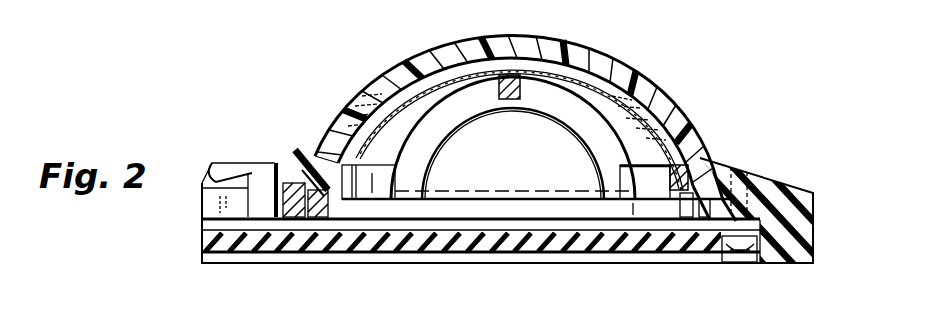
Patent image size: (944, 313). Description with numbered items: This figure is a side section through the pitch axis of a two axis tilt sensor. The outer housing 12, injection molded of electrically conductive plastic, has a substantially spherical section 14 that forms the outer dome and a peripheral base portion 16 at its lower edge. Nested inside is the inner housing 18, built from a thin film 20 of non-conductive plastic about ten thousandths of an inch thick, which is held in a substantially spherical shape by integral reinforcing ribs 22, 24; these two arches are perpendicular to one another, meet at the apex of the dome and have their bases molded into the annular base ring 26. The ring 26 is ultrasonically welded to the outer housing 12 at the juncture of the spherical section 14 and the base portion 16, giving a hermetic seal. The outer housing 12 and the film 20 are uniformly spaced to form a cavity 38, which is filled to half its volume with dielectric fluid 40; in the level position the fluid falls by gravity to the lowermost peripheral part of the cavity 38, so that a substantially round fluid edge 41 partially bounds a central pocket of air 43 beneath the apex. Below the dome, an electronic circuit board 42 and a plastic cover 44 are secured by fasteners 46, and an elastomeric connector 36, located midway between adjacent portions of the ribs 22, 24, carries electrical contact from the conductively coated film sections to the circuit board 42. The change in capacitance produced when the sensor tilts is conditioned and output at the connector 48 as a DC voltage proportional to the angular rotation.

The outer housing 12 is at (692, 115).
The substantially spherical section 14 is at (533, 34).
The peripheral base portion 16 is at (719, 177).
The inner housing 18 is at (398, 61).
The thin film 20 is at (444, 42).
The reinforcing rib 22 is at (441, 137).
The reinforcing rib 24 is at (575, 110).
The annular base ring 26 is at (308, 152).
The elastomeric connector 36 is at (684, 209).
The cavity 38 is at (509, 50).
The dielectric fluid 40 is at (674, 138).
The fluid edge 41 is at (630, 93).
The electronic circuit board 42 is at (483, 192).
The pocket of air 43 is at (572, 74).
The plastic cover 44 is at (567, 247).
The fastener 46 is at (750, 268).
The connector 48 is at (238, 162).